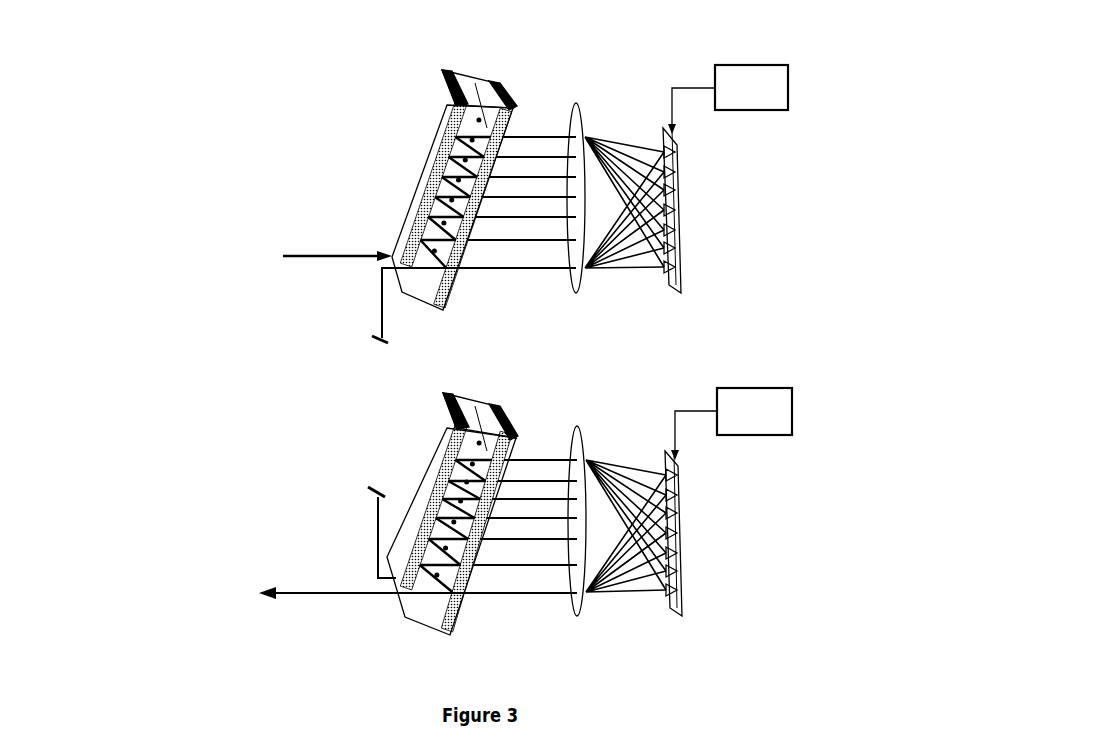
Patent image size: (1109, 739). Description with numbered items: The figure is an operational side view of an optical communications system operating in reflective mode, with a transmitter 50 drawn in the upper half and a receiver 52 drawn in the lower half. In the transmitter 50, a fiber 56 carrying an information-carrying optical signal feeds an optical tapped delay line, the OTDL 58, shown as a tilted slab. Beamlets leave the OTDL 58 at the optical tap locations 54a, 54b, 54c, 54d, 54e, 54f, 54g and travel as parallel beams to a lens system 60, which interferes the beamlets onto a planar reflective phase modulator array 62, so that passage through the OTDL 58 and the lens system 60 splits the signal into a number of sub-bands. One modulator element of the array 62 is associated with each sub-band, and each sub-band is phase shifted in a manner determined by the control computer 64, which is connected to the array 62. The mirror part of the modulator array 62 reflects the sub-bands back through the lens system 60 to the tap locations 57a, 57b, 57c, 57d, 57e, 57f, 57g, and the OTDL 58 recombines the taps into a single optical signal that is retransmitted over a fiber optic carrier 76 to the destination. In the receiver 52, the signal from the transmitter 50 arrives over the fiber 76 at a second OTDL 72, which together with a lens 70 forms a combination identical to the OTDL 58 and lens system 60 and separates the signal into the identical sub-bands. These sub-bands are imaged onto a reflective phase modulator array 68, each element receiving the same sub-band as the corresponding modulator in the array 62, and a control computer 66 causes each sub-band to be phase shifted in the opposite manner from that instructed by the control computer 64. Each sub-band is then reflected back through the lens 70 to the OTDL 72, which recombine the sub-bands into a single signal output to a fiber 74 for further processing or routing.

The transmitter 50 is at (273, 345).
The receiver 52 is at (276, 424).
The optical tap location 54a is at (432, 251).
The optical tap location 54b is at (441, 223).
The optical tap location 54c is at (449, 200).
The optical tap location 54d is at (456, 180).
The optical tap location 54e is at (463, 160).
The optical tap location 54f is at (470, 140).
The optical tap location 54g is at (476, 120).
The fiber 56 is at (295, 256).
The tap location 57a is at (459, 270).
The tap location 57b is at (468, 242).
The tap location 57c is at (476, 219).
The tap location 57d is at (483, 199).
The tap location 57e is at (490, 179).
The tap location 57f is at (497, 159).
The tap location 57g is at (503, 139).
The OTDL 58 is at (475, 174).
The lens system 60 is at (575, 103).
The planar reflective phase modulator array 62 is at (677, 290).
The control computer 64 is at (758, 110).
The control computer 66 is at (760, 435).
The reflective phase modulator array 68 is at (678, 613).
The lens 70 is at (577, 426).
The OTDL 72 is at (443, 393).
The fiber 74 is at (277, 593).
The fiber optic carrier 76 is at (380, 332).